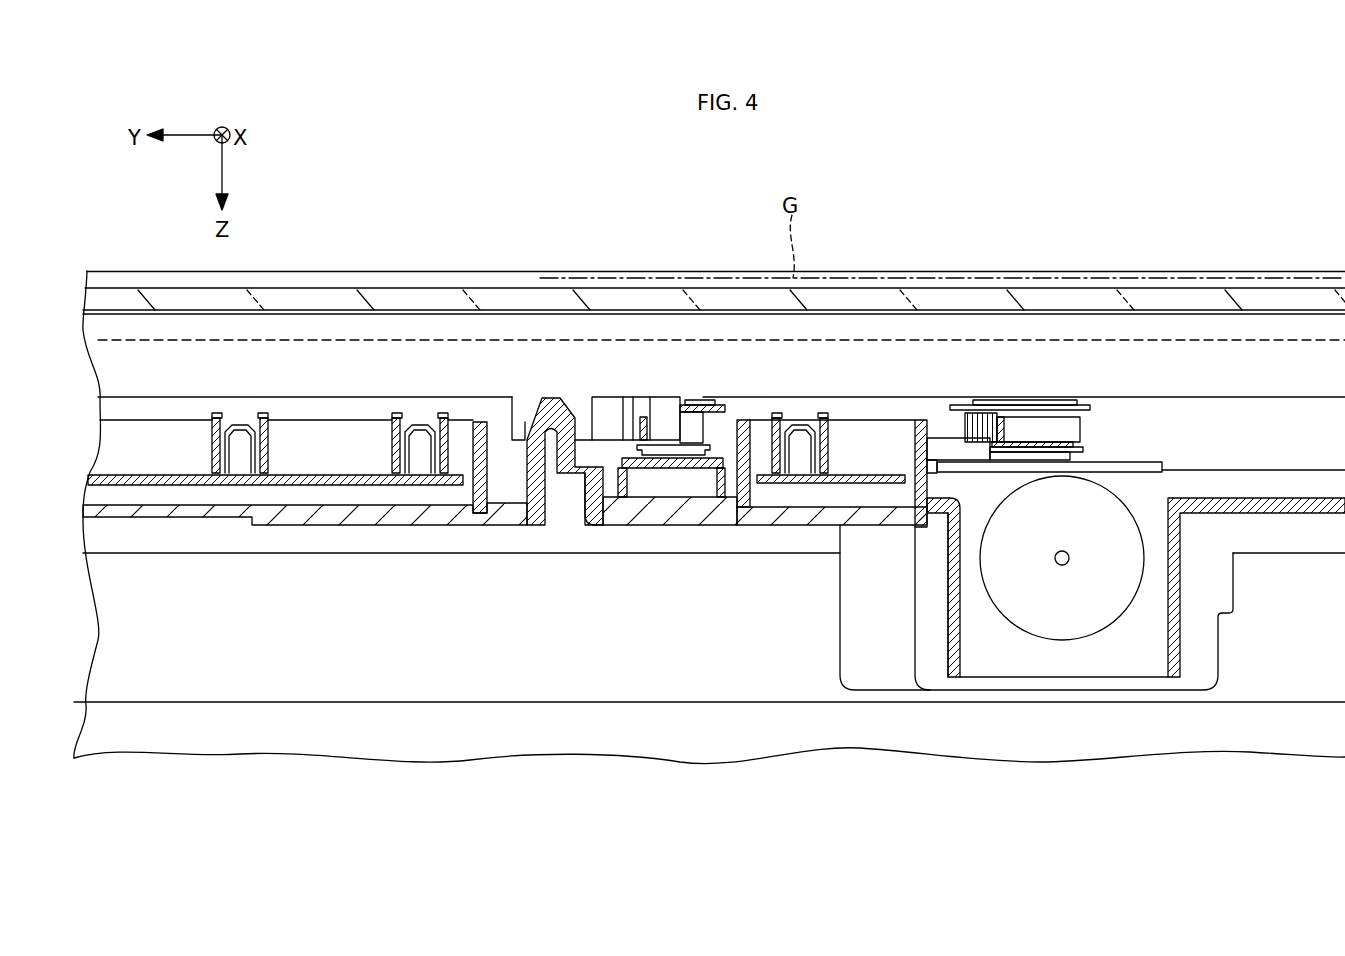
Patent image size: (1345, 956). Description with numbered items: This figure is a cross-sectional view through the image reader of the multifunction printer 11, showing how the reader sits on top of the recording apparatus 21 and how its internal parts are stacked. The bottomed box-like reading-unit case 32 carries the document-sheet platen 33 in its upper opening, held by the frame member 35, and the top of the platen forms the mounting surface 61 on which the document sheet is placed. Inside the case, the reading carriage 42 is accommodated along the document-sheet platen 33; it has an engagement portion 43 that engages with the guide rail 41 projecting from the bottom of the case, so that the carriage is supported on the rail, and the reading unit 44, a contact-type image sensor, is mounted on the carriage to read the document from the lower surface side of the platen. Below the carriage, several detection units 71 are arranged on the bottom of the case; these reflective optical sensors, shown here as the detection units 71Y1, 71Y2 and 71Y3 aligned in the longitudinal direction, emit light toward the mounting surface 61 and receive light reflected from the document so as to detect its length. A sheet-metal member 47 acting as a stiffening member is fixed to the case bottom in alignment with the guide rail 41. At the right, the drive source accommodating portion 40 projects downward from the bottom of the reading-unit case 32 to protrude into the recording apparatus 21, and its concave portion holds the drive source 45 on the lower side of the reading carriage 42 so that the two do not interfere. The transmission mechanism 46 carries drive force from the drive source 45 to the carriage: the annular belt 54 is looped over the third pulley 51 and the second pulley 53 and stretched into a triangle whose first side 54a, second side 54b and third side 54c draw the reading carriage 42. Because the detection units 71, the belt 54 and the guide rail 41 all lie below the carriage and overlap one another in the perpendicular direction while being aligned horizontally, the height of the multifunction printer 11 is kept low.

The multifunction printer 11 is at (1042, 190).
The recording apparatus 21 is at (148, 685).
The reading-unit case 32 is at (375, 525).
The document-sheet platen 33 is at (1105, 300).
The frame member 35 is at (1205, 272).
The drive source accommodating portion 40 is at (990, 663).
The guide rail 41 is at (538, 425).
The reading carriage 42 is at (300, 355).
The engagement portion 43 is at (510, 417).
The reading unit 44 is at (336, 318).
The drive source 45 is at (1117, 607).
The transmission mechanism 46 is at (1110, 385).
The sheet-metal member 47 is at (665, 468).
The third pulley 51 is at (1078, 405).
The second pulley 53 is at (690, 427).
The belt 54 is at (1141, 413).
The first side 54a is at (640, 430).
The second side 54b is at (1040, 397).
The third side 54c is at (938, 425).
The mounting surface 61 is at (988, 290).
The detection unit 71 is at (522, 323).
The detection unit 71Y1 is at (797, 440).
The detection unit 71Y2 is at (418, 433).
The detection unit 71Y3 is at (237, 437).